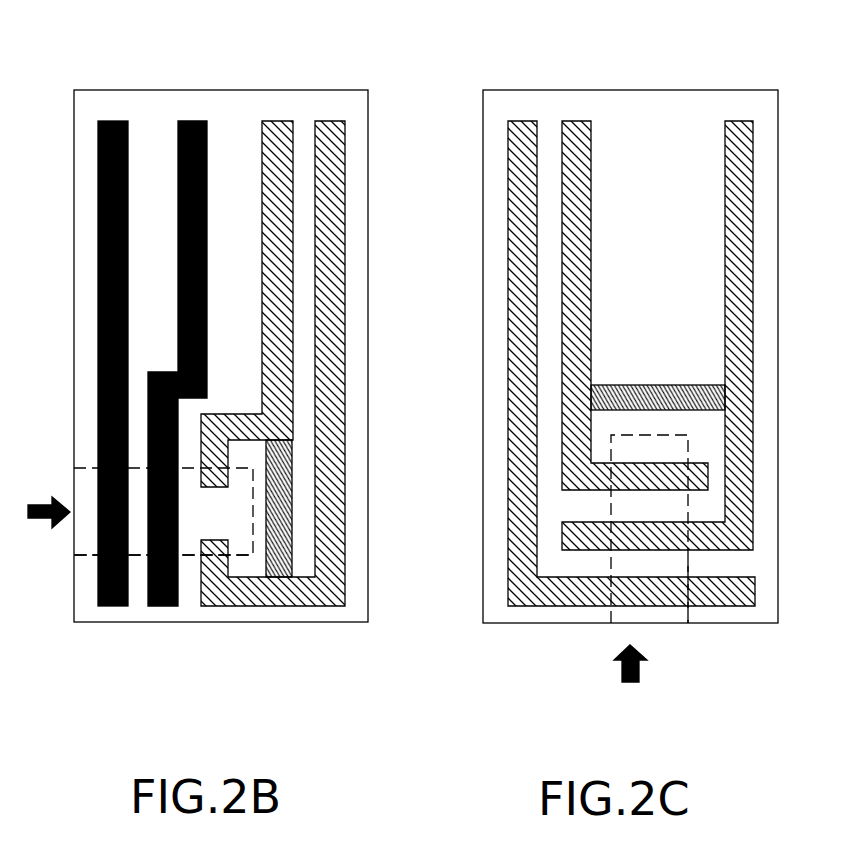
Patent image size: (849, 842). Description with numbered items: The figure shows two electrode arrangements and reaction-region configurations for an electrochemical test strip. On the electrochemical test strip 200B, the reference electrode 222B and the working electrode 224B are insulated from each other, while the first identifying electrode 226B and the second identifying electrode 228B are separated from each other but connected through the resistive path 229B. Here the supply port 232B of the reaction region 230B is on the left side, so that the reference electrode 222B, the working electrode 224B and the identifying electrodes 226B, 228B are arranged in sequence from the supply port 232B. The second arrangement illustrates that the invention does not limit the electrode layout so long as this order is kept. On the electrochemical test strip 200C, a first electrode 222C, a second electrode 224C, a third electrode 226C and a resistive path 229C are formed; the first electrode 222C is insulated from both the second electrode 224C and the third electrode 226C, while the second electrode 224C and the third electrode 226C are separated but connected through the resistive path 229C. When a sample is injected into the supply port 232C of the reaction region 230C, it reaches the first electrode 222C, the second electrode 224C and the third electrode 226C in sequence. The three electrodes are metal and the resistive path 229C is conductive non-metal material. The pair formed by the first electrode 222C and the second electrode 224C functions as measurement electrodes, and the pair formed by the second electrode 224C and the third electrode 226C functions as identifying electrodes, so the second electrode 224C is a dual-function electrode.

In FIG. 2B, the electrochemical test strip 200B is at (243, 90).
In FIG. 2B, the reference electrode 222B is at (98, 121).
In FIG. 2B, the working electrode 224B is at (197, 121).
In FIG. 2B, the first identifying electrode 226B is at (270, 302).
In FIG. 2B, the second identifying electrode 228B is at (333, 395).
In FIG. 2B, the resistive path 229B is at (285, 506).
In FIG. 2B, the reaction region 230B is at (86, 557).
In FIG. 2B, the supply port 232B is at (130, 506).
In FIG. 2C, the electrochemical test strip 200C is at (650, 90).
In FIG. 2C, the first electrode 222C is at (557, 592).
In FIG. 2C, the second electrode 224C is at (742, 150).
In FIG. 2C, the third electrode 226C is at (570, 150).
In FIG. 2C, the resistive path 229C is at (657, 385).
In FIG. 2C, the reaction region 230C is at (690, 613).
In FIG. 2C, the supply port 232C is at (648, 576).